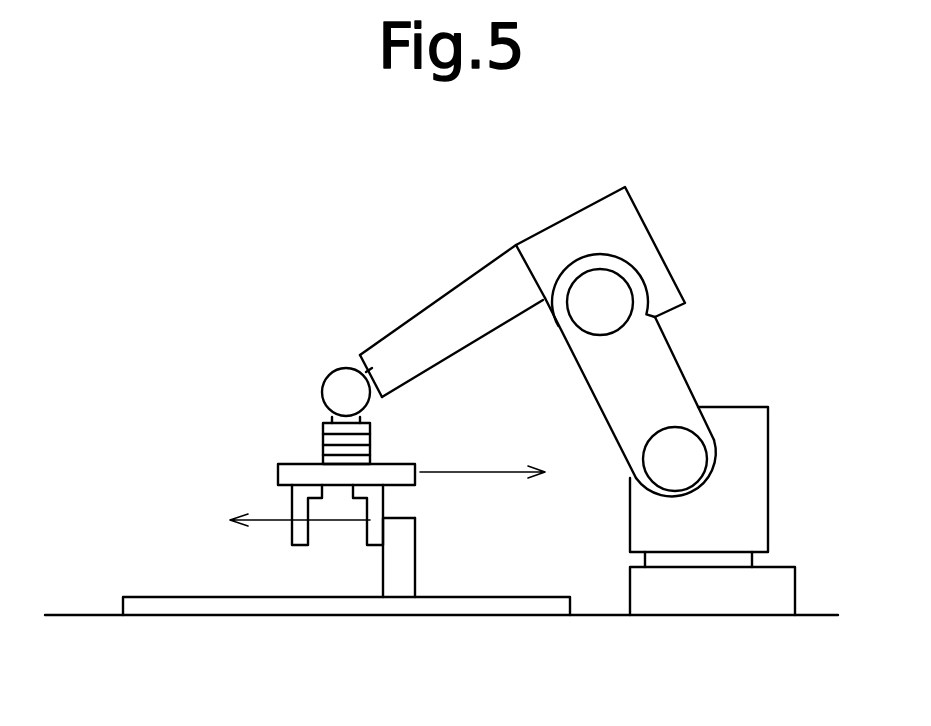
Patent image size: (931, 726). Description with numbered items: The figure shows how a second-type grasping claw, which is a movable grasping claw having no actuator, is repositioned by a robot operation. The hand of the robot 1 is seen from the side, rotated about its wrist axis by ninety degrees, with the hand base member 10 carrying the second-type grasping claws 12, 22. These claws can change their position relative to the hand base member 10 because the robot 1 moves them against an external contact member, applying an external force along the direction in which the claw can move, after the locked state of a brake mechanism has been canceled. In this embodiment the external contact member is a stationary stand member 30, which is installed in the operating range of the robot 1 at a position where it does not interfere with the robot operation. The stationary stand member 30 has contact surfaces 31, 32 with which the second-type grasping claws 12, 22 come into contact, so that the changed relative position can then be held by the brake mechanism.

The robot 1 is at (710, 377).
The hand base member 10 is at (303, 464).
The second-type grasping claw 12 is at (373, 545).
The second-type grasping claw 22 is at (297, 547).
The stationary stand member 30 is at (398, 590).
The contact surface 31 is at (383, 578).
The contact surface 32 is at (415, 555).